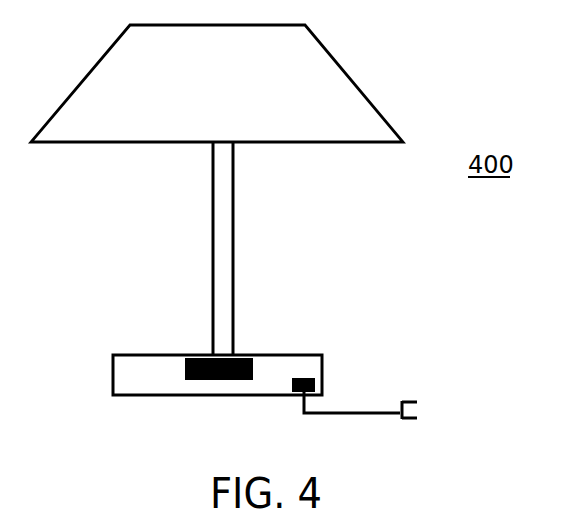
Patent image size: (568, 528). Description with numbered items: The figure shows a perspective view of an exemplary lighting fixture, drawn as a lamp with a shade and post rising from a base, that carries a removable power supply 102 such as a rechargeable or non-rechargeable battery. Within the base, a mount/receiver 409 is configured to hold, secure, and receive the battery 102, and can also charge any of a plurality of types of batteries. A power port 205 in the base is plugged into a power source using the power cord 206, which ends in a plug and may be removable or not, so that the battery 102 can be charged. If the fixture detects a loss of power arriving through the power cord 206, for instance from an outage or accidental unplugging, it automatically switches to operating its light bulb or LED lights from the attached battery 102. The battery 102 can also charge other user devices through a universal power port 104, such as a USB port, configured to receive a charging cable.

The universal power port 104 is at (139, 341).
The removable power supply 102 is at (265, 364).
The mount/receiver 409 is at (174, 372).
The power port 205 is at (305, 362).
The power cord 206 is at (366, 398).